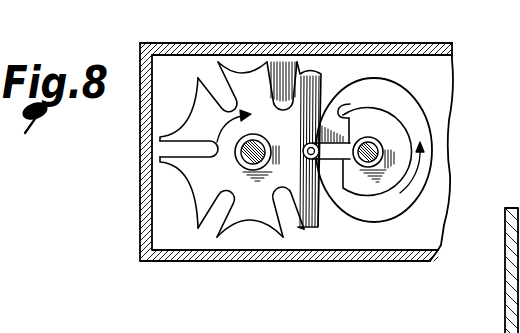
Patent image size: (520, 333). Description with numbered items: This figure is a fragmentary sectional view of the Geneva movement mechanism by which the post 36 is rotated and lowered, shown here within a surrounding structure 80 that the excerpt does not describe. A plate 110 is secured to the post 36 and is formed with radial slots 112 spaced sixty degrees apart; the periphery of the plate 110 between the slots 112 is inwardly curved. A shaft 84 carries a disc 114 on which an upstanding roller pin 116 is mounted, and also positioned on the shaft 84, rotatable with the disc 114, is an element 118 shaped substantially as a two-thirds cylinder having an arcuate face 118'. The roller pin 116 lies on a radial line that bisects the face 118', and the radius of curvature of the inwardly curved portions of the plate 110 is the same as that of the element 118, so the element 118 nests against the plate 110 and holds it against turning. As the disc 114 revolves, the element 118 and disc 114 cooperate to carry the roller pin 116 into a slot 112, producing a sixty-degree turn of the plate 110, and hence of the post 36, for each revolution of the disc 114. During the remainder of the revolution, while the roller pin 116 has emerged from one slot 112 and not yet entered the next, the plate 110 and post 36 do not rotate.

The housing wall 80 is at (140, 133).
The plate 110 is at (246, 77).
The radial slots 112 is at (201, 58).
The post 36 is at (236, 165).
The roller pin 116 is at (307, 148).
The shaft 84 is at (368, 147).
The element 118 is at (419, 152).
The arcuate face 118' is at (356, 101).
The disc 114 is at (418, 122).